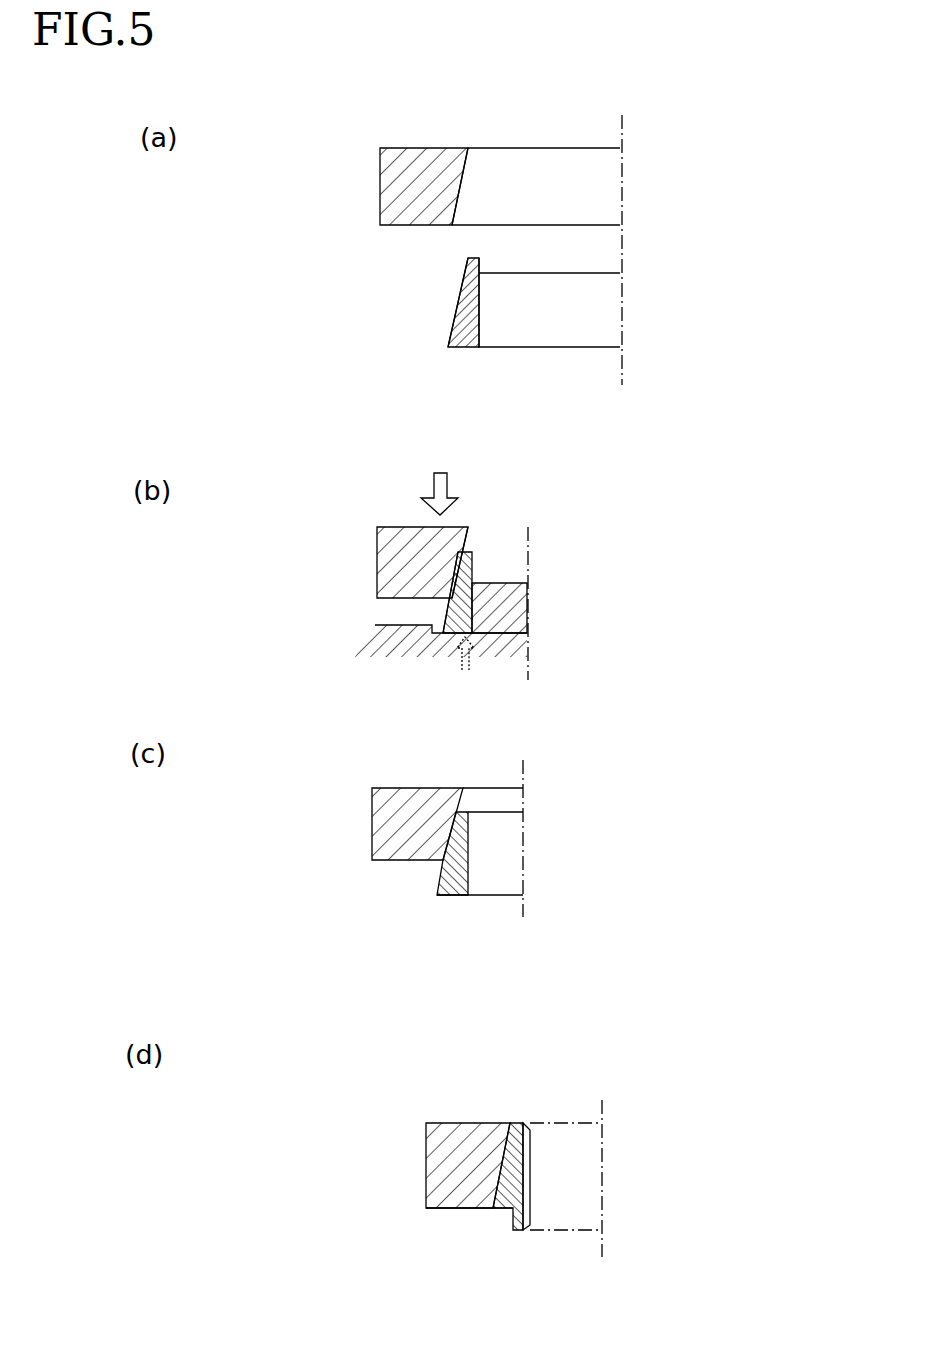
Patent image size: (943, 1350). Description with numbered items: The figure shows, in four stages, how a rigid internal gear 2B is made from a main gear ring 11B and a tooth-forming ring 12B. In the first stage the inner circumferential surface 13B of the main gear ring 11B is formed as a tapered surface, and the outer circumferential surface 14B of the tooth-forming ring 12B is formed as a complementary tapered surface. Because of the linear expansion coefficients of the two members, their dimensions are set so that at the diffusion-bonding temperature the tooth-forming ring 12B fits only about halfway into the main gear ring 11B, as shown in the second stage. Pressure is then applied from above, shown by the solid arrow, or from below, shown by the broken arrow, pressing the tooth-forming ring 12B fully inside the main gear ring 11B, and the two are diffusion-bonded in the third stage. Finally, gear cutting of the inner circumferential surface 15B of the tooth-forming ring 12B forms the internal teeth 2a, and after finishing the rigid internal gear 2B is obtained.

The main gear ring 11B is at (419, 158).
The tooth-forming ring 12B is at (430, 337).
The inner circumferential surface 13B is at (465, 185).
The outer circumferential surface 14B is at (463, 288).
The inner circumferential surface 15B is at (480, 316).
The internal teeth 2a is at (533, 1170).
The rigid internal gear 2B is at (472, 1232).